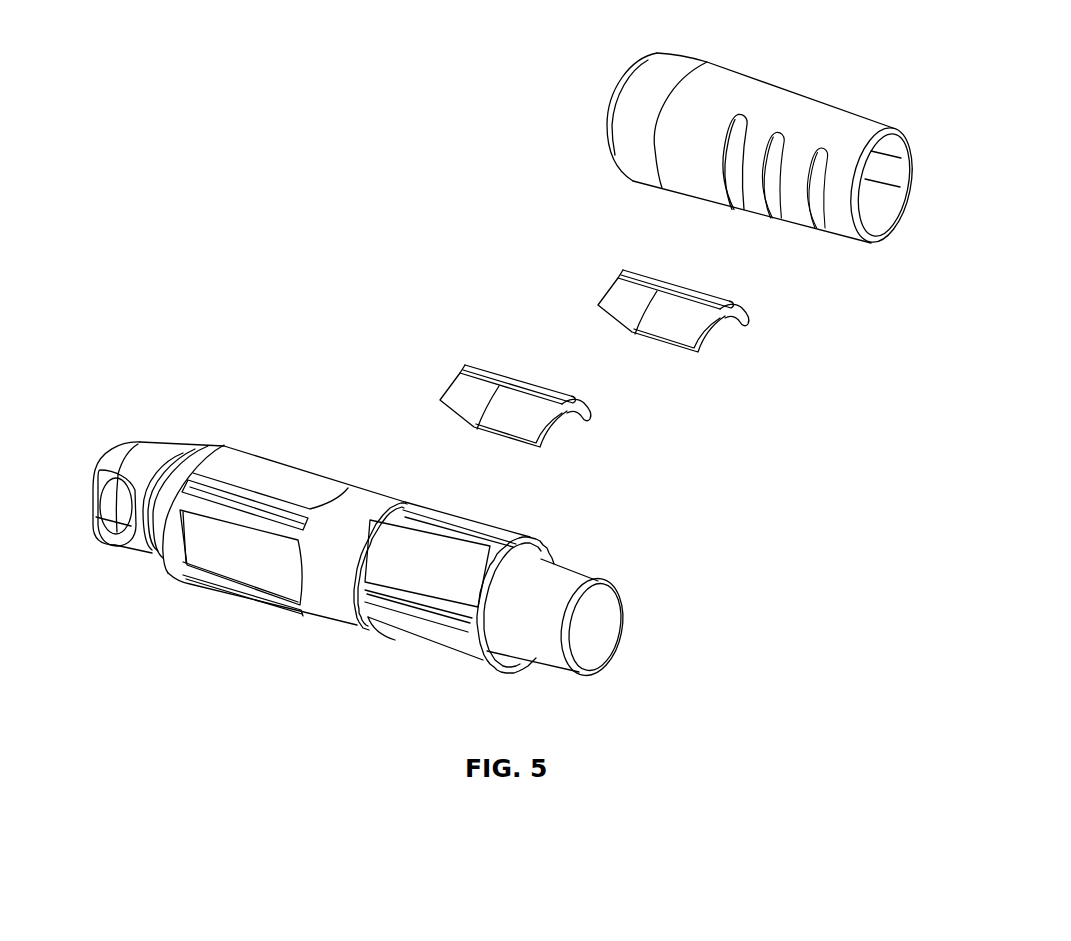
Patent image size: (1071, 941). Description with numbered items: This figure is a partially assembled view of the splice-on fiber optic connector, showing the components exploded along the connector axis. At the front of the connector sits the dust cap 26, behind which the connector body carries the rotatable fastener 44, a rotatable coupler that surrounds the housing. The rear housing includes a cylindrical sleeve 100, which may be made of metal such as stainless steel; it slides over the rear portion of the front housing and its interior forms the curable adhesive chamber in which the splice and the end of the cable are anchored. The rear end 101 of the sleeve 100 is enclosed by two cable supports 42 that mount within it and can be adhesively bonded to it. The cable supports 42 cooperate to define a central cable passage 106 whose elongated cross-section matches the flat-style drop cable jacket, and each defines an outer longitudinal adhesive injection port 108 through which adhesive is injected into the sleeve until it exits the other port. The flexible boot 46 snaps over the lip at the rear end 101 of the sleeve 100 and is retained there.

The dust cap 26 is at (255, 465).
The cable support 42 is at (594, 355).
The rotatable fastener 44 is at (447, 513).
The flexible boot 46 is at (775, 84).
The sleeve 100 is at (593, 604).
The rear end of the sleeve 101 is at (623, 613).
The central cable passage 106 is at (731, 326).
The adhesive injection port 108 is at (693, 292).